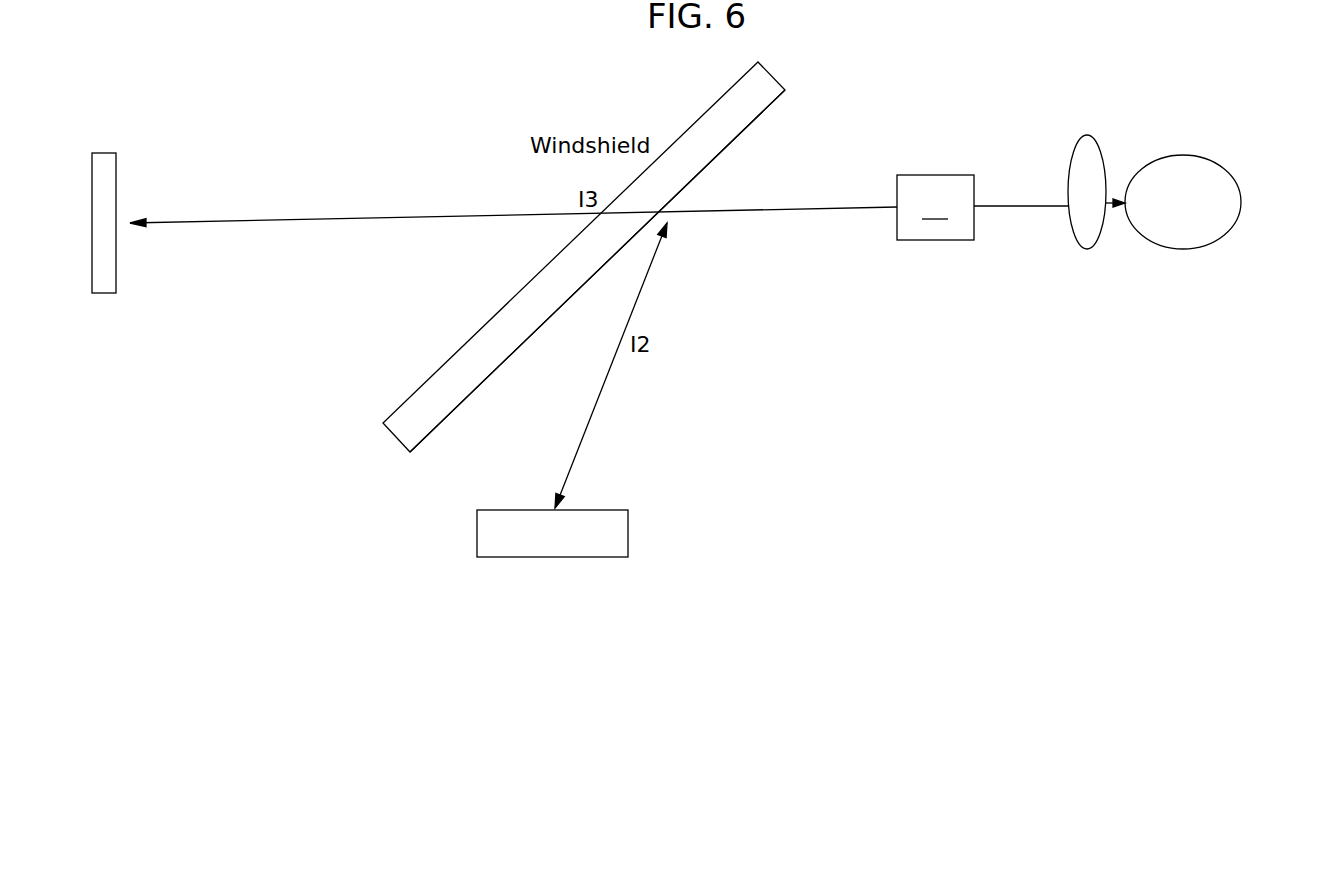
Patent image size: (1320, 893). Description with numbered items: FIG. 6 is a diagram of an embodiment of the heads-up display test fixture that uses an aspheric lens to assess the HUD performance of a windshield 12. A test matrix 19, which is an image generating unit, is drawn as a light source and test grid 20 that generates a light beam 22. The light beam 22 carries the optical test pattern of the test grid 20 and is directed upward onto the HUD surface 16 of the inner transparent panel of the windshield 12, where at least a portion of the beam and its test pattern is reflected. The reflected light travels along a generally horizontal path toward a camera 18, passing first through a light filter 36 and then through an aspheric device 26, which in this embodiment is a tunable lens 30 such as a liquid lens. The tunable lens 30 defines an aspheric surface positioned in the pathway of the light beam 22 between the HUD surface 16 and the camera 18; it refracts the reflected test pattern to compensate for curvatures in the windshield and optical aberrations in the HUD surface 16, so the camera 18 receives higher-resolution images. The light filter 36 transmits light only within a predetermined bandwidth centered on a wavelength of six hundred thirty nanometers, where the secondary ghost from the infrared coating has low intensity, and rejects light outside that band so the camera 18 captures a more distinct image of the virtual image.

The windshield 12 is at (498, 308).
The HUD surface 16 is at (565, 307).
The camera 18 is at (1218, 162).
The test matrix 19 is at (547, 545).
The test grid and light source 20 is at (630, 532).
The light beam 22 is at (617, 378).
The aspheric device 26 is at (1098, 147).
The tunable lens 30 is at (1087, 208).
The light filter 36 is at (982, 207).